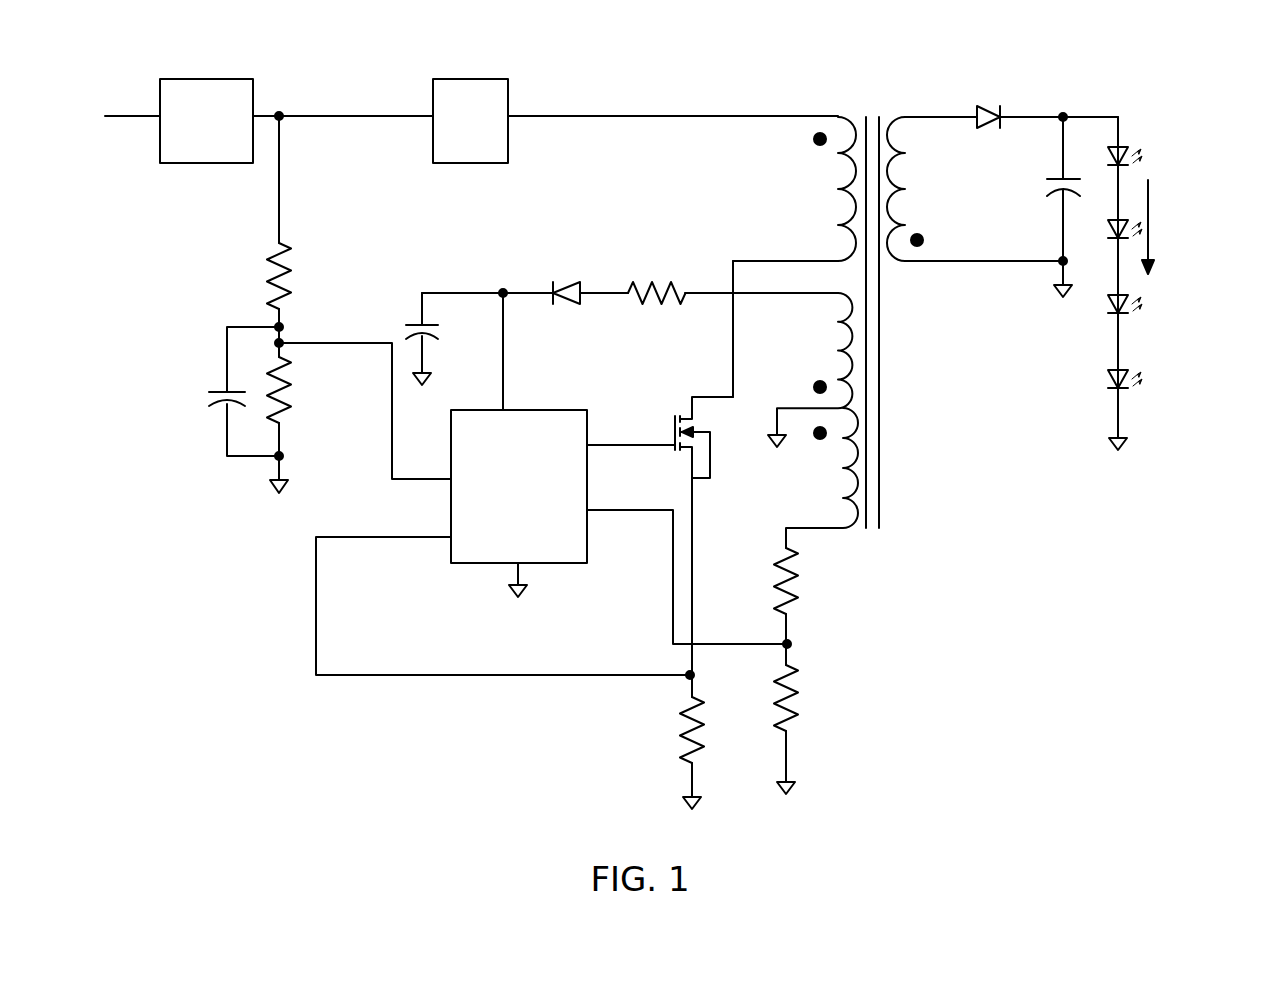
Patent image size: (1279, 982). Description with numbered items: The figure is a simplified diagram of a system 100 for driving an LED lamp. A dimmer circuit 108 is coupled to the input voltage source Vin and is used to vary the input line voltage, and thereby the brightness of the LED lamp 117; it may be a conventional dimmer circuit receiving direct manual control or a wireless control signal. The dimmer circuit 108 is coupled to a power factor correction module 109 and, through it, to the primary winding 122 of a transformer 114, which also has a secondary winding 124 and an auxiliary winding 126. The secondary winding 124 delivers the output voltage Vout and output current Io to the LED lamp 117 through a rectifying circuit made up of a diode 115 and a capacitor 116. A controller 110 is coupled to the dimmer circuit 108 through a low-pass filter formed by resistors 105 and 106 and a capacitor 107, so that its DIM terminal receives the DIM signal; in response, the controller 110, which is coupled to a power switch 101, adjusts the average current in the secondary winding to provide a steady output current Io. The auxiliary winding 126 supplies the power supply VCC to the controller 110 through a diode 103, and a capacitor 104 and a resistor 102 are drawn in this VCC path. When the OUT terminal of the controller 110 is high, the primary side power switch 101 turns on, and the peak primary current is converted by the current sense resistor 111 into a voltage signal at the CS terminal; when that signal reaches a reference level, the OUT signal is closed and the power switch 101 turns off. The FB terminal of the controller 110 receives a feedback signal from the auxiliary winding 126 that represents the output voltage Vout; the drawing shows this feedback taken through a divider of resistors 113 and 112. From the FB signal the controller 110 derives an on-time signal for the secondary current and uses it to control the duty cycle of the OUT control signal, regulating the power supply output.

The system 100 is at (1180, 108).
The power switch 101 is at (692, 537).
The resistor 102 is at (657, 280).
The diode 103 is at (563, 283).
The VCC capacitor 104 is at (441, 339).
The resistor 105 is at (295, 276).
The resistor 106 is at (298, 390).
The capacitor 107 is at (223, 391).
The dimmer circuit 108 is at (206, 137).
The power factor correction module 109 is at (489, 121).
The controller 110 is at (445, 462).
The current sense resistor 111 is at (708, 730).
The resistor 112 is at (805, 698).
The resistor 113 is at (802, 581).
The transformer 114 is at (898, 308).
The diode 115 is at (1000, 105).
The capacitor 116 is at (1054, 189).
The LED lamp 117 is at (1155, 283).
The primary winding 122 is at (794, 189).
The secondary winding 124 is at (975, 189).
The auxiliary winding 126 is at (813, 420).